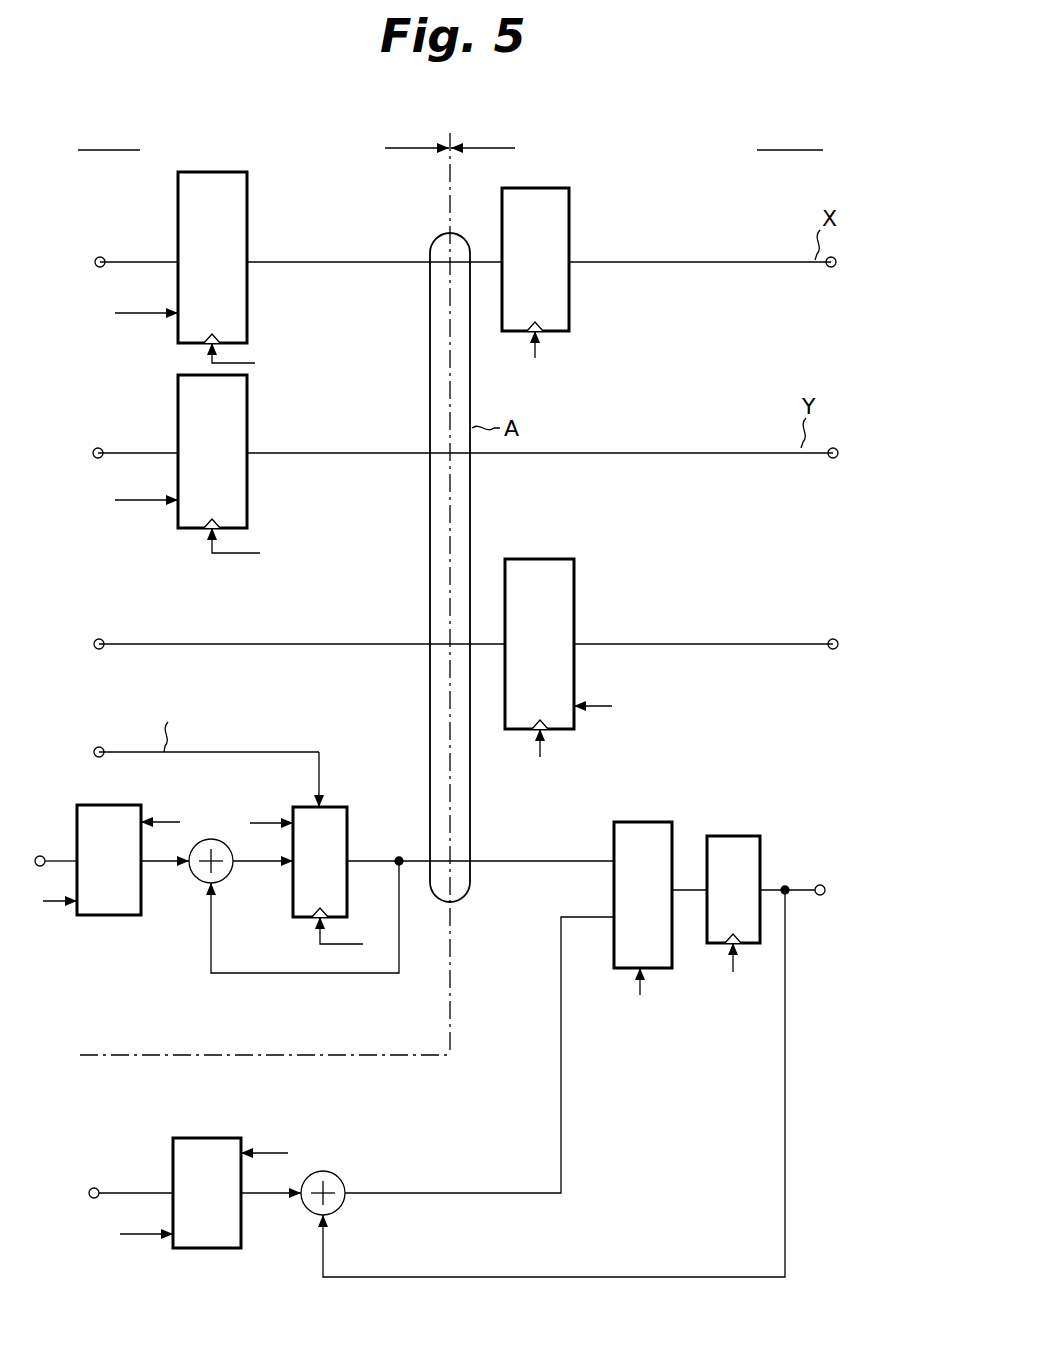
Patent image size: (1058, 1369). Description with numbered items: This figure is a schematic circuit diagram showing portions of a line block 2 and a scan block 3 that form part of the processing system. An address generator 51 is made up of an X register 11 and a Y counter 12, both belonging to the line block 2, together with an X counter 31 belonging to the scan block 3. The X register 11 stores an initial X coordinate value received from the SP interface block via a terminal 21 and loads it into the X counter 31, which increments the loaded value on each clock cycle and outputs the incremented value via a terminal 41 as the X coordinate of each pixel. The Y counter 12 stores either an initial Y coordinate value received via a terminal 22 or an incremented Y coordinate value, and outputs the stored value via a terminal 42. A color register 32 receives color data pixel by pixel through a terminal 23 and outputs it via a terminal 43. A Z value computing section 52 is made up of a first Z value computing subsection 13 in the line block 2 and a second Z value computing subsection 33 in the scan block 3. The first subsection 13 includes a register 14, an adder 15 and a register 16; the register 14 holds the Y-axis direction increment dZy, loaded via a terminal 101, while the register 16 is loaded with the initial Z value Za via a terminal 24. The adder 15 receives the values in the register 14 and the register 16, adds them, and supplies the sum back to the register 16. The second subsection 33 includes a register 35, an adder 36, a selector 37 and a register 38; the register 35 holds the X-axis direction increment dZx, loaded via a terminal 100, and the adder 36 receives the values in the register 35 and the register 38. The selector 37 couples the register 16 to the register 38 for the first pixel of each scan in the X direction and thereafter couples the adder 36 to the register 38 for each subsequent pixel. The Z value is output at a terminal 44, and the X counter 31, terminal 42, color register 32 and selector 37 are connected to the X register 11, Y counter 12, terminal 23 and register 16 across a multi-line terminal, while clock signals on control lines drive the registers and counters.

The line block 2 is at (263, 144).
The scan block 3 is at (637, 144).
The X register 11 is at (248, 216).
The Y counter 12 is at (248, 417).
The first Z value computing subsection 13 is at (345, 740).
The register 14 is at (104, 915).
The adder 15 is at (198, 886).
The register 16 is at (348, 828).
The terminal 21 is at (100, 255).
The terminal 22 is at (98, 448).
The terminal 23 is at (102, 641).
The terminal 24 is at (96, 747).
The X counter 31 is at (570, 217).
The color register 32 is at (576, 597).
The second Z value computing subsection 33 is at (488, 1157).
The register 35 is at (207, 1248).
The adder 36 is at (309, 1217).
The selector 37 is at (642, 822).
The register 38 is at (739, 836).
The terminal 41 is at (831, 268).
The terminal 42 is at (833, 459).
The terminal 43 is at (833, 650).
The Z value output terminal 44 is at (820, 896).
The address generator 51 is at (738, 235).
The Z value computing section 52 is at (532, 859).
The terminal 100 is at (92, 1190).
The terminal 101 is at (41, 856).